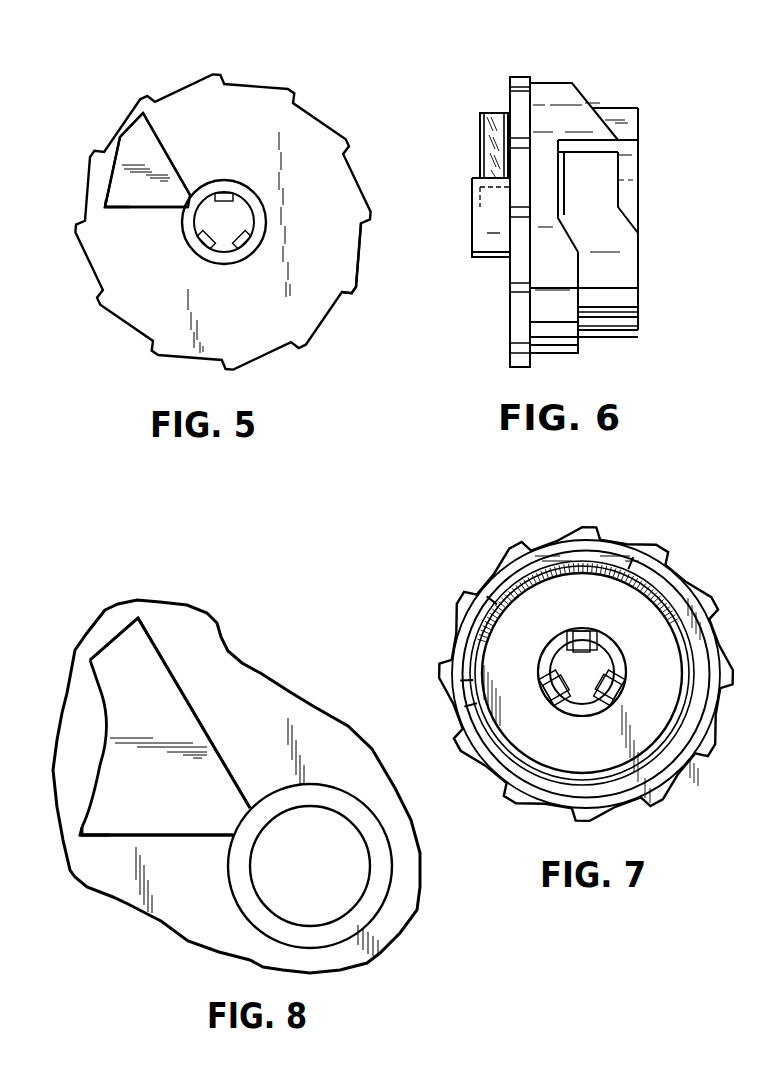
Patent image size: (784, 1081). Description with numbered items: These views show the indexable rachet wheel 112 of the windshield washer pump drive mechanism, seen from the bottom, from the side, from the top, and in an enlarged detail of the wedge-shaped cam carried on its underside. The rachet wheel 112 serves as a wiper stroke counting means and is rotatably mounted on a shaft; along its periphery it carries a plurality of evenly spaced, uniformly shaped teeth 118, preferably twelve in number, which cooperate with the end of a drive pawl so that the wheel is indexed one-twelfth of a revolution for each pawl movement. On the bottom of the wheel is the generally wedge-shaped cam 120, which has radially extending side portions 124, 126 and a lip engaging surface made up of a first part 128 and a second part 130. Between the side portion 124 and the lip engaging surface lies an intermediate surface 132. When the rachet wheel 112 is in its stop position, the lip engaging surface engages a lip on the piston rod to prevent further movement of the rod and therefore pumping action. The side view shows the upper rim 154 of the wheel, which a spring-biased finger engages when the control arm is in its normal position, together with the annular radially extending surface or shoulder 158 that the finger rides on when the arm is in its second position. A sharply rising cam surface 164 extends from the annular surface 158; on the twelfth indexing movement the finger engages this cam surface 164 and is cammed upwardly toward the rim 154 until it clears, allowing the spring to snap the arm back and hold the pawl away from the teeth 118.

In FIG. 5, the rachet wheel 112 is at (308, 130).
In FIG. 6, the rachet wheel 112 is at (555, 360).
In FIG. 7, the rachet wheel 112 is at (487, 623).
In FIG. 8, the rachet wheel 112 is at (311, 724).
In FIG. 5, the teeth 118 is at (358, 278).
In FIG. 6, the teeth 118 is at (520, 362).
In FIG. 7, the teeth 118 is at (530, 542).
In FIG. 5, the cam 120 is at (162, 130).
In FIG. 6, the cam 120 is at (478, 145).
In FIG. 8, the cam 120 is at (153, 670).
In FIG. 5, the side portion 124 is at (167, 212).
In FIG. 8, the side portion 124 is at (193, 837).
In FIG. 5, the side portion 126 is at (173, 160).
In FIG. 6, the side portion 126 is at (498, 122).
In FIG. 8, the side portion 126 is at (198, 706).
In FIG. 5, the first part of lip engaging surface 128 is at (117, 160).
In FIG. 8, the first part of lip engaging surface 128 is at (103, 697).
In FIG. 5, the second part of lip engaging surface 130 is at (145, 142).
In FIG. 8, the second part of lip engaging surface 130 is at (117, 628).
In FIG. 5, the intermediate surface 132 is at (100, 212).
In FIG. 8, the intermediate surface 132 is at (73, 870).
In FIG. 6, the upper rim 154 is at (618, 193).
In FIG. 7, the upper rim 154 is at (473, 650).
In FIG. 6, the annular radially extending surface 158 is at (578, 345).
In FIG. 7, the annular radially extending surface 158 is at (488, 743).
In FIG. 6, the cam surface 164 is at (587, 95).
In FIG. 7, the cam surface 164 is at (588, 552).